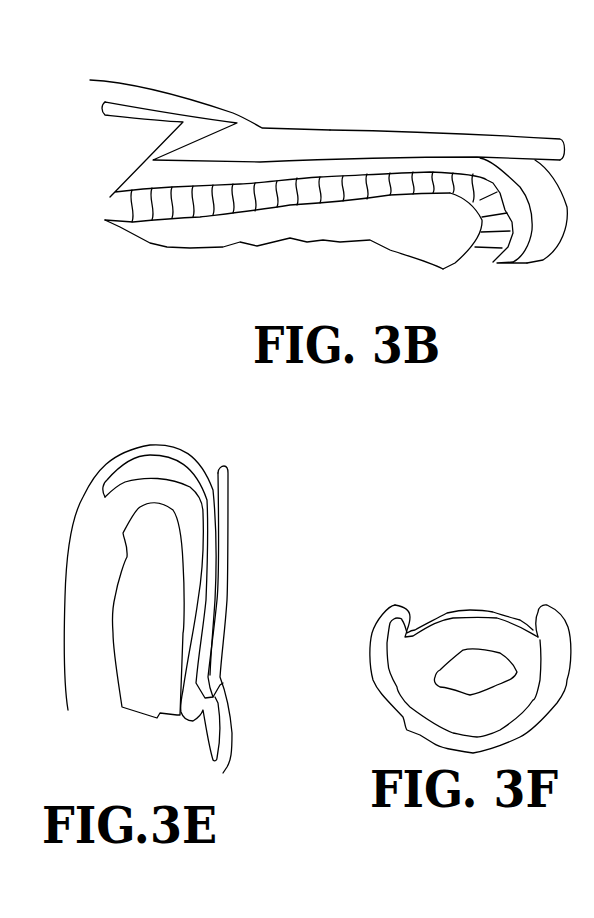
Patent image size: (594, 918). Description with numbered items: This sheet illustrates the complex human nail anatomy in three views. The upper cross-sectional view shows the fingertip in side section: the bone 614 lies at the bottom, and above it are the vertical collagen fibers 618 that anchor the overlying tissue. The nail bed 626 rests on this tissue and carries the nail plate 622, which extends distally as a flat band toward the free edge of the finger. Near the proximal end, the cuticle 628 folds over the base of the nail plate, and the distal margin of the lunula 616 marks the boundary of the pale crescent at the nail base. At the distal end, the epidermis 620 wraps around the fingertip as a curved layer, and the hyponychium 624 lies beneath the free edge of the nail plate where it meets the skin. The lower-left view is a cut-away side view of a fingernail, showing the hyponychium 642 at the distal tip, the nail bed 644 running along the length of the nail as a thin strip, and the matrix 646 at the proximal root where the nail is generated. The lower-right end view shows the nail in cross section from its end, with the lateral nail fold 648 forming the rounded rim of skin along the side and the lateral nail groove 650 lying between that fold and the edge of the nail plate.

In FIG. 3B, the bone 614 is at (213, 235).
In FIG. 3B, the distal margin of the lunula 616 is at (310, 130).
In FIG. 3B, the vertical collagen fibers 618 is at (430, 183).
In FIG. 3B, the epidermis 620 is at (560, 252).
In FIG. 3B, the nail plate 622 is at (543, 137).
In FIG. 3B, the hyponychium 624 is at (482, 157).
In FIG. 3B, the nail bed 626 is at (388, 175).
In FIG. 3B, the cuticle 628 is at (253, 130).
In FIG. 3E, the hyponychium 642 is at (207, 502).
In FIG. 3E, the nail bed 644 is at (210, 580).
In FIG. 3E, the matrix 646 is at (197, 727).
In FIG. 3F, the lateral nail fold 648 is at (390, 607).
In FIG. 3F, the lateral nail groove 650 is at (410, 625).